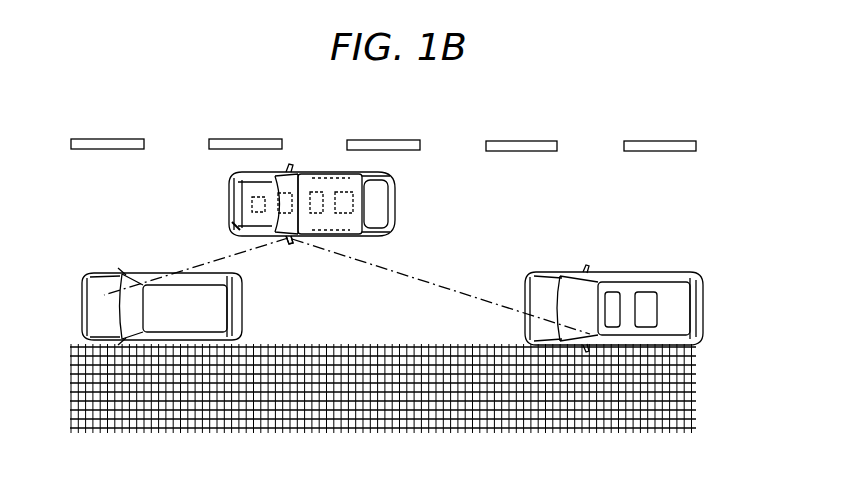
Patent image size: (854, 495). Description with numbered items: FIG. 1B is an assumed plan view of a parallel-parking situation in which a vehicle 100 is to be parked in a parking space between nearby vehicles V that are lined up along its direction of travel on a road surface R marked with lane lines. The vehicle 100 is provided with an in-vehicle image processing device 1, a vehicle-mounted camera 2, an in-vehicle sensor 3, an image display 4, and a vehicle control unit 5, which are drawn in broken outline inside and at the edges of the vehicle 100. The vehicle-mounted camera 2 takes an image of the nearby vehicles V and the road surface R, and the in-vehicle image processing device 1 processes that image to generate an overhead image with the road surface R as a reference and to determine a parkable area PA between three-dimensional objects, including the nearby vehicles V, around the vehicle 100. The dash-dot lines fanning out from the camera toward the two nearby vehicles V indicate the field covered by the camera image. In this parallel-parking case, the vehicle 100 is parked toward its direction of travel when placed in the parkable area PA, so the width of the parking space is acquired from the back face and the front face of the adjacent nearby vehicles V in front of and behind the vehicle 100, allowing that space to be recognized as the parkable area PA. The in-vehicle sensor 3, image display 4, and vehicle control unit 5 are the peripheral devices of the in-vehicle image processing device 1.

The vehicle 100 is at (331, 202).
The in-vehicle image processing device 1 is at (343, 190).
The vehicle-mounted camera 2 is at (290, 240).
The in-vehicle sensor 3 is at (310, 192).
The image display 4 is at (236, 227).
The vehicle control unit 5 is at (254, 207).
The road surface R is at (527, 181).
The nearby vehicle V is at (102, 273).
The parkable area PA is at (397, 303).